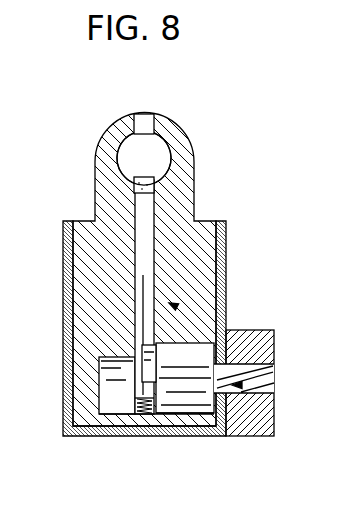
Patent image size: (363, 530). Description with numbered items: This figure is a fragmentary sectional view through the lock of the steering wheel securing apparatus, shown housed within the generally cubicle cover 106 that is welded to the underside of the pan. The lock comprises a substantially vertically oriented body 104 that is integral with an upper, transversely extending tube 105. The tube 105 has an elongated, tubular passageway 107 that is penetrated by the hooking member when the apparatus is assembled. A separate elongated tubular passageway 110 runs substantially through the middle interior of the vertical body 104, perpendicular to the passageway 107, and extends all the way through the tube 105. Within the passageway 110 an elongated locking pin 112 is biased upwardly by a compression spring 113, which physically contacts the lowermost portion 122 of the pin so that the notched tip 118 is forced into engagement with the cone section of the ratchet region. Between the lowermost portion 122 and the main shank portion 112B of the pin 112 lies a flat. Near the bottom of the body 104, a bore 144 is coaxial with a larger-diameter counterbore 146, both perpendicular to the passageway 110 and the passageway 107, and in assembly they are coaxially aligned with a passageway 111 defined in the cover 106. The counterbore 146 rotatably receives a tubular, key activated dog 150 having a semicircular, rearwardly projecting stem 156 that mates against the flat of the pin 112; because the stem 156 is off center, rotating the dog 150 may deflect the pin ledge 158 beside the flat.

The body 104 is at (95, 297).
The tube 105 is at (186, 157).
The cover 106 is at (243, 427).
The tubular passageway 107 is at (125, 160).
The tubular passageway 110 is at (146, 111).
The passageway 111 is at (263, 382).
The locking pin 112 is at (170, 304).
The main shank portion 112B is at (142, 253).
The compression spring 113 is at (147, 417).
The notched tip 118 is at (146, 184).
The lowermost portion 122 is at (113, 383).
The bore 144 is at (147, 392).
The counterbore 146 is at (188, 401).
The tubular dog 150 is at (238, 385).
The stem 156 is at (160, 378).
The pin ledge 158 is at (157, 352).